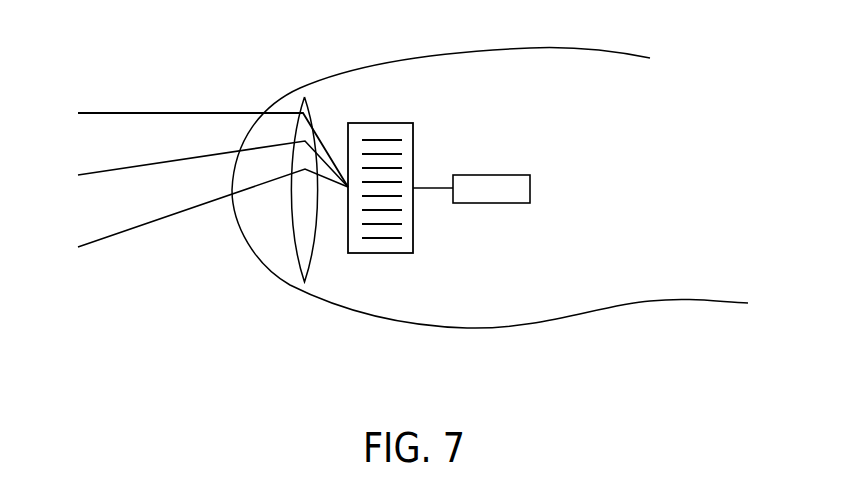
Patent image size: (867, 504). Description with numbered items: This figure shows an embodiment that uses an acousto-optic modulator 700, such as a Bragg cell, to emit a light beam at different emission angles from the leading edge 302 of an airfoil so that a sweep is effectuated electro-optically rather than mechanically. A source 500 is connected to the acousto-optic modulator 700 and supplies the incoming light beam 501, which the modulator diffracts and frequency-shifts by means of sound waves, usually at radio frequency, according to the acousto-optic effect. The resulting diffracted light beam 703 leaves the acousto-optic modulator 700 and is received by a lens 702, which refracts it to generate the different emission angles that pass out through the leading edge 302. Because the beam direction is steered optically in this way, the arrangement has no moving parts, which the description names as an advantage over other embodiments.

The leading edge 302 is at (303, 92).
The processor 500 is at (475, 175).
The incoming light beam 501 is at (437, 187).
The acousto-optic modulator 700 is at (398, 123).
The lens 702 is at (297, 255).
The diffracted light beam 703 is at (327, 147).